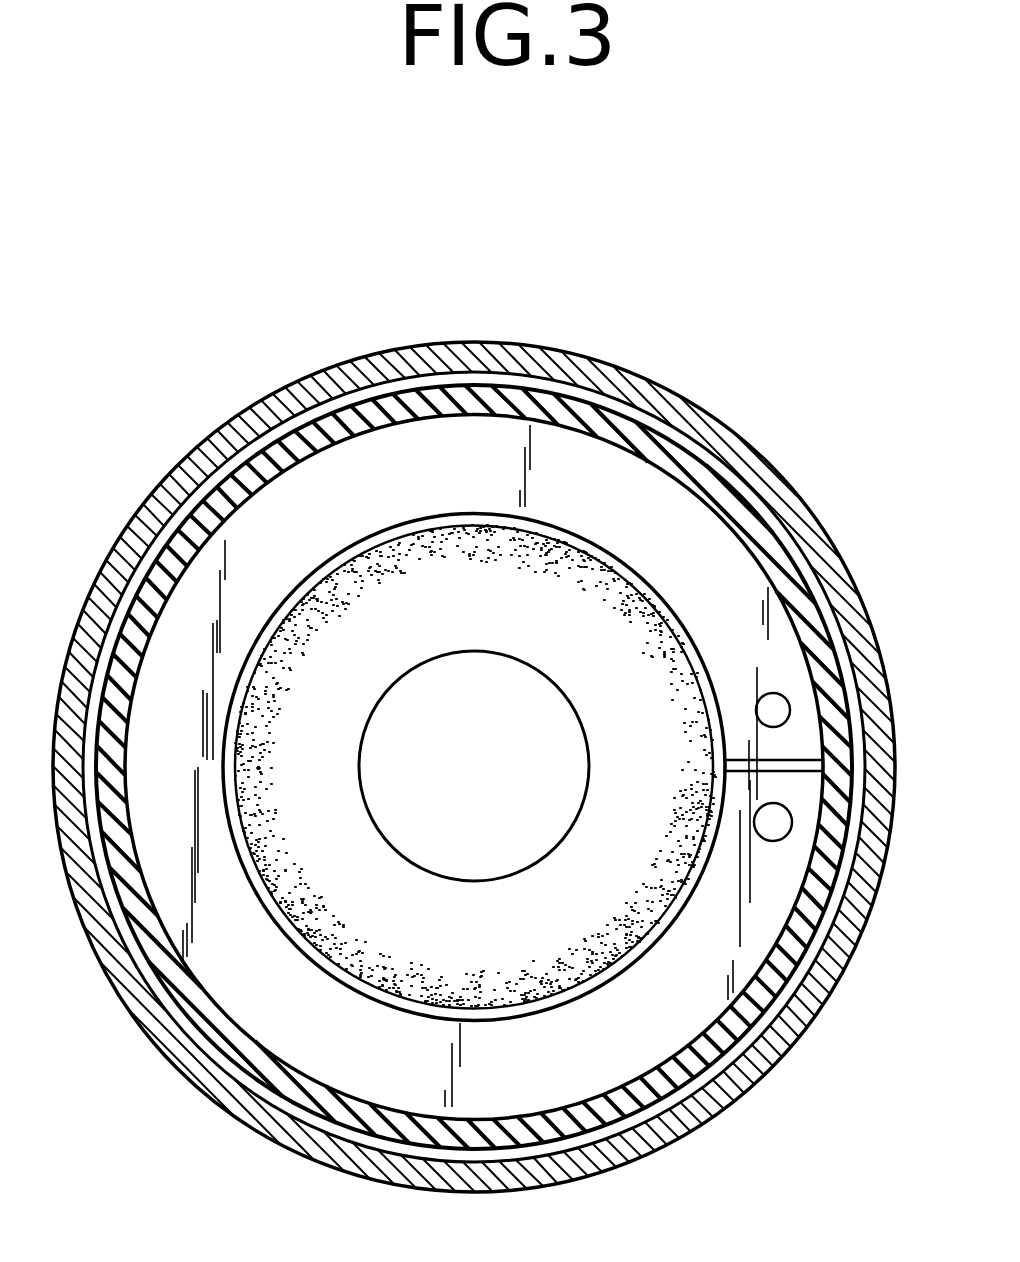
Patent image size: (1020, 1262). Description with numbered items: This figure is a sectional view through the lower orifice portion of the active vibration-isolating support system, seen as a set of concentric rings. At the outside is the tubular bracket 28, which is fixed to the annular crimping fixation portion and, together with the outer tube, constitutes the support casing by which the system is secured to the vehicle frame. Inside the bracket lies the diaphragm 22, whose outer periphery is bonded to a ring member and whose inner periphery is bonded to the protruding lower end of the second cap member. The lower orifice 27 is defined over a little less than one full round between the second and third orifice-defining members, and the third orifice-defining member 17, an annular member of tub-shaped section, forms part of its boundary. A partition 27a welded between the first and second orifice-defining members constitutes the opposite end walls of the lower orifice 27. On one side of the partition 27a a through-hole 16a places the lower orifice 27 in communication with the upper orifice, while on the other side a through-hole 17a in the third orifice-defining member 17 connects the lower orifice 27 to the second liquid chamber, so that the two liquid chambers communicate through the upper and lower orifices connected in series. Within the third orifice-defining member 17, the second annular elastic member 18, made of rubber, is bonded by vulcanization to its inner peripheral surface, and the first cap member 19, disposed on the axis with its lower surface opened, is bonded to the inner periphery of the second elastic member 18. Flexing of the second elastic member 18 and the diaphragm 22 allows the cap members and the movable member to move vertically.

The tubular bracket 28 is at (703, 425).
The diaphragm 22 is at (302, 437).
The lower orifice 27 is at (427, 493).
The second annular elastic member 18 is at (370, 905).
The third orifice-defining member 17 is at (472, 545).
The first cap member 19 is at (494, 790).
The through-hole 16a is at (757, 697).
The partition 27a is at (728, 775).
The through-hole 17a is at (752, 840).